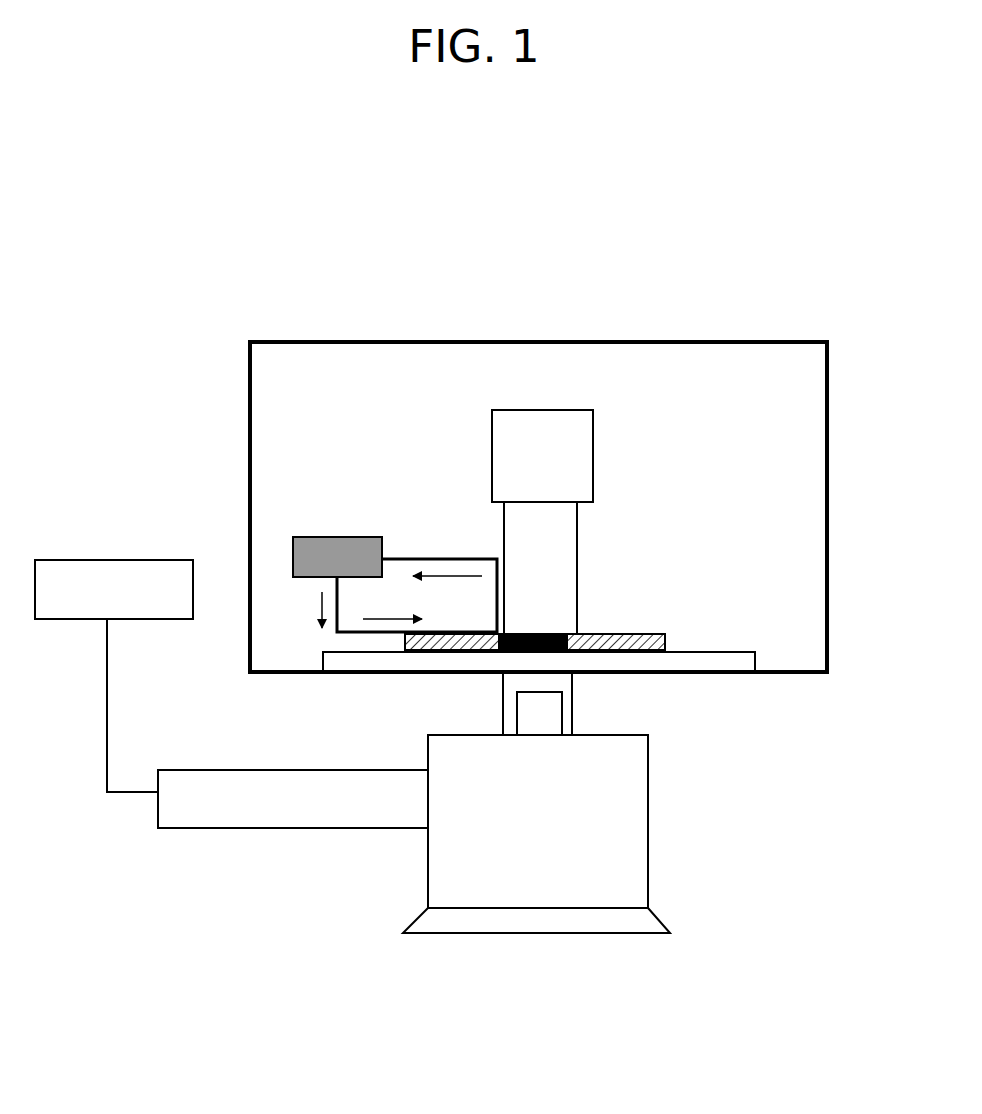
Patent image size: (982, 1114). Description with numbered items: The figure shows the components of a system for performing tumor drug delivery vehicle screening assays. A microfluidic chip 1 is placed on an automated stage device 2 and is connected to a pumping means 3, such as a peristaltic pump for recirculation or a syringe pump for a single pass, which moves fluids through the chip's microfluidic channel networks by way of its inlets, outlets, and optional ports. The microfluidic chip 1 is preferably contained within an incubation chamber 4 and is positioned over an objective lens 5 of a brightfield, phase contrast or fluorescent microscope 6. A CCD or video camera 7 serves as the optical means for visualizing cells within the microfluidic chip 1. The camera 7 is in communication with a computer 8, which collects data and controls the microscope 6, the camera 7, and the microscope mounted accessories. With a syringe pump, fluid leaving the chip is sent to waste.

The microfluidic chip 1 is at (558, 627).
The automated stage device 2 is at (677, 632).
The pumping means 3 is at (395, 561).
The incubation chamber 4 is at (822, 415).
The objective lens 5 is at (547, 707).
The microscope 6 is at (536, 834).
The camera 7 is at (293, 799).
The computer 8 is at (114, 676).